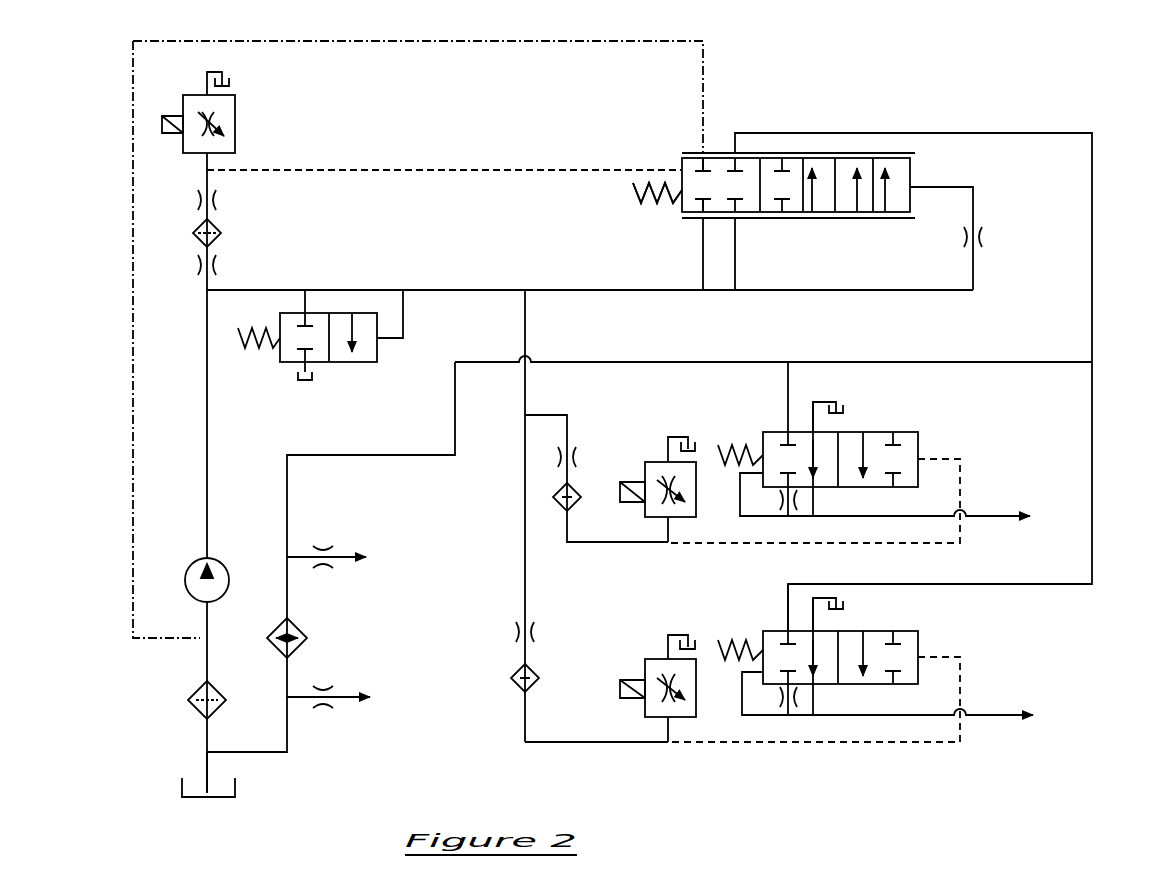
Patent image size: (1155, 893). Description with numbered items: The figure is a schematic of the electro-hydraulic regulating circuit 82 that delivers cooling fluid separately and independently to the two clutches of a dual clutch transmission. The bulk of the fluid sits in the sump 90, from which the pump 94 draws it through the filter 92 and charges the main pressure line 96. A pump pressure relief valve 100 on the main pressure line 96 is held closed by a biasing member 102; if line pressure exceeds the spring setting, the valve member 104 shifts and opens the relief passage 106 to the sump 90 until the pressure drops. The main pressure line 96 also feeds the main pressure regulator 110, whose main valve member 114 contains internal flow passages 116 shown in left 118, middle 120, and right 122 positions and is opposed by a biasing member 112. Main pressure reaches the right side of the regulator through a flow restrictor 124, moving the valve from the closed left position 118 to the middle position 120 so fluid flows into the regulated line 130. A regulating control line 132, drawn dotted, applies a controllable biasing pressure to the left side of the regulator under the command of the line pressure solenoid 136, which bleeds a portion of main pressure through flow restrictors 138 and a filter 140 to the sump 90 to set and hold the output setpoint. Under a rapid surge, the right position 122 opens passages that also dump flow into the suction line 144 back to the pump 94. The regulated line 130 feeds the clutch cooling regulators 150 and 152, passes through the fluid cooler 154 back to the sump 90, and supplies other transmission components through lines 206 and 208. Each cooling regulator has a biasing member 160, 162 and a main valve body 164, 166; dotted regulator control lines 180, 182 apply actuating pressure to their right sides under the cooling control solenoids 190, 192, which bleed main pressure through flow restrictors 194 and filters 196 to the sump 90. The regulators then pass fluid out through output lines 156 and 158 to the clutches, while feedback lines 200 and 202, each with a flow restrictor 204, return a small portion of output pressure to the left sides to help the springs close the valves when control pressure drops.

The regulating circuit 82 is at (934, 101).
The sump 90 is at (232, 78).
The filter 92 is at (197, 690).
The pump 94 is at (229, 575).
The main pressure line 96 is at (443, 287).
The pump pressure relief valve 100 is at (355, 363).
The biasing member 102 is at (240, 345).
The valve member 104 is at (377, 345).
The relief passage 106 is at (305, 300).
The main pressure regulator 110 is at (762, 153).
The biasing member 112 is at (653, 200).
The main valve member 114 is at (910, 172).
The internal flow passages 116 is at (902, 227).
The left position 118 is at (747, 203).
The middle position 120 is at (805, 208).
The right position 122 is at (868, 205).
The flow restrictor 124 is at (985, 242).
The regulated line 130 is at (1092, 228).
The regulating control line 132 is at (477, 170).
The line pressure solenoid 136 is at (236, 124).
The flow restrictors 138 is at (218, 266).
The filter 140 is at (216, 228).
The suction line 144 is at (662, 42).
The clutch cooling regulator 150 is at (907, 432).
The clutch cooling regulator 152 is at (920, 638).
The fluid cooler 154 is at (298, 627).
The output line 156 is at (977, 522).
The output line 158 is at (975, 717).
The biasing member 160 is at (725, 447).
The biasing member 162 is at (727, 640).
The main valve body 164 is at (852, 438).
The main valve body 166 is at (873, 633).
The regulator control line 180 is at (953, 458).
The regulator control line 182 is at (962, 678).
The cooling control solenoid 190 is at (645, 465).
The cooling control solenoid 192 is at (645, 667).
The flow restrictors 194 is at (558, 455).
The filters 196 is at (558, 502).
The feedback line 200 is at (738, 503).
The feedback line 202 is at (738, 708).
The flow restrictors 204 is at (778, 504).
The line 206 is at (350, 553).
The line 208 is at (350, 690).